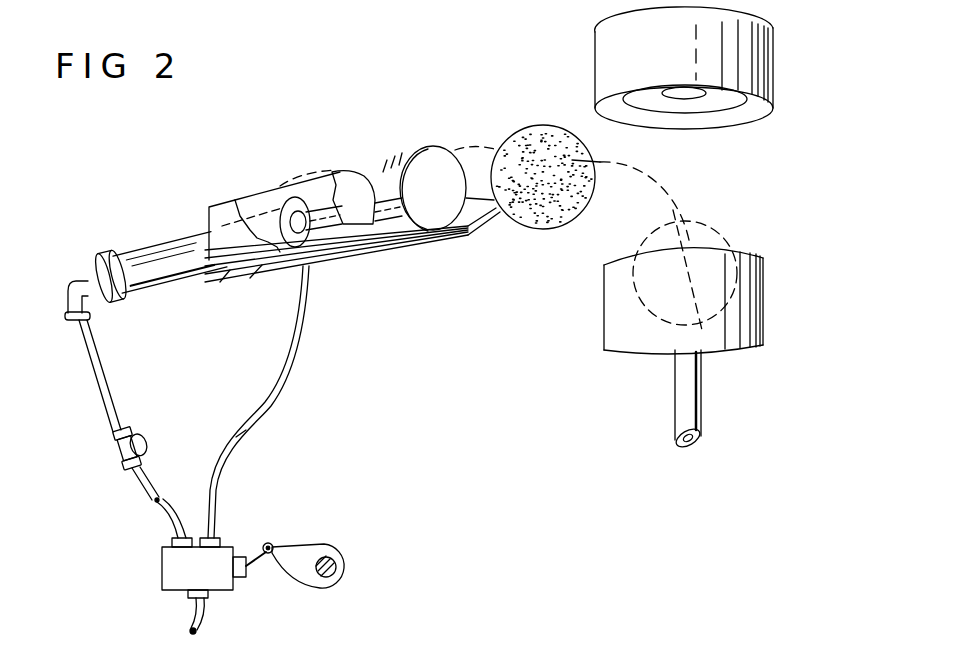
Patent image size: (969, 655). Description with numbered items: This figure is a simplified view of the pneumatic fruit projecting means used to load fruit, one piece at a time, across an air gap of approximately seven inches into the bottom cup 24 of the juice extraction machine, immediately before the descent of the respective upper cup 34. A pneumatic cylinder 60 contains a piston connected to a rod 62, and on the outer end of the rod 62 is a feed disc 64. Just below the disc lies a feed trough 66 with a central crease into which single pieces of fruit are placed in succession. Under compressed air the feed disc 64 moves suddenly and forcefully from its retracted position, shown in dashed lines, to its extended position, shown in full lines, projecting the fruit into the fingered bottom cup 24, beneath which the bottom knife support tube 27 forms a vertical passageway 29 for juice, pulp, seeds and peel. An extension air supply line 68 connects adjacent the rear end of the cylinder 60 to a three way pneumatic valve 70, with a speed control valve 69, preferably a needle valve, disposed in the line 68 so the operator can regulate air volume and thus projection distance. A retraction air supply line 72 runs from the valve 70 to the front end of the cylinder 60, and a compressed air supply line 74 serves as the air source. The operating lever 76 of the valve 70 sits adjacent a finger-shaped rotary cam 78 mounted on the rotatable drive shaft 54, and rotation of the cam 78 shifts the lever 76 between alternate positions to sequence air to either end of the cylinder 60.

The pneumatic cylinder 60 is at (142, 266).
The rod 62 is at (384, 200).
The feed disc 64 is at (437, 182).
The feed trough 66 is at (427, 240).
The upper cup 34 is at (768, 40).
The bottom cup 24 is at (748, 316).
The bottom knife support tube 27 is at (692, 402).
The passageway 29 is at (692, 442).
The extension air supply line 68 is at (87, 342).
The speed control valve 69 is at (123, 457).
The retraction air supply line 72 is at (297, 340).
The three way pneumatic valve 70 is at (168, 568).
The compressed air supply line 74 is at (193, 618).
The operating lever 76 is at (245, 555).
The rotary cam 78 is at (302, 565).
The drive shaft 54 is at (338, 567).